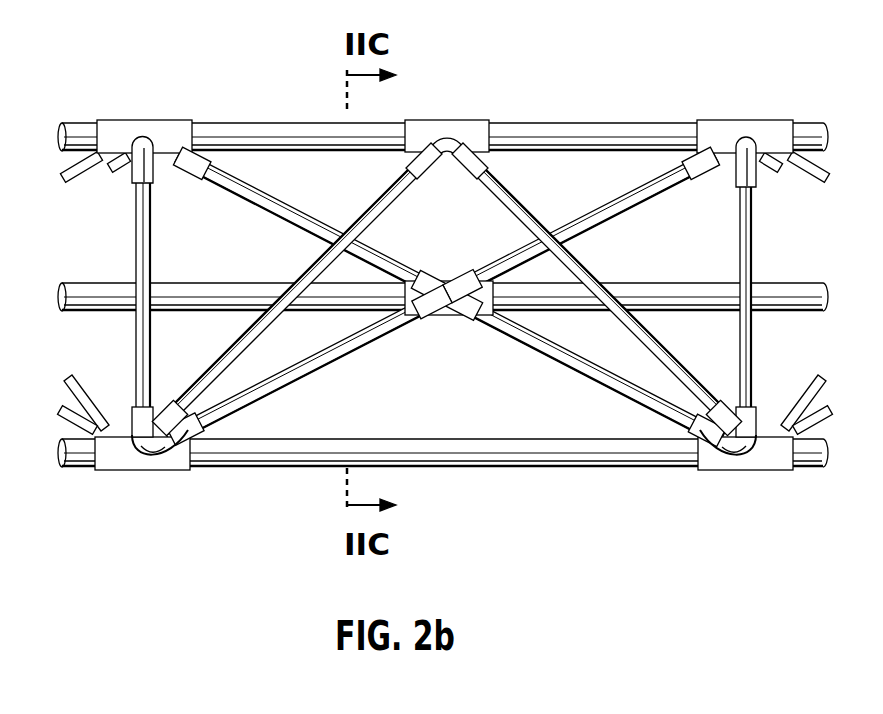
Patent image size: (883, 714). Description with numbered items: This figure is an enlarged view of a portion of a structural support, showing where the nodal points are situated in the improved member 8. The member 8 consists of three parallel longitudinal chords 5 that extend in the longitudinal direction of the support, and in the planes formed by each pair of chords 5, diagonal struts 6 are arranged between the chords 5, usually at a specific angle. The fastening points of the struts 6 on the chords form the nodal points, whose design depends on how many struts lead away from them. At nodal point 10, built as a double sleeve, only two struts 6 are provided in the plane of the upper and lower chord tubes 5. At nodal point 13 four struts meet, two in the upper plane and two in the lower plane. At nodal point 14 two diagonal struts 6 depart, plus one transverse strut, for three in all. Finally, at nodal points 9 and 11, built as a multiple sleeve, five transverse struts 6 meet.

The longitudinal chord 5 is at (810, 134).
The diagonal strut 6 is at (363, 221).
The member 8 is at (608, 516).
The nodal point 9 is at (718, 446).
The nodal point 10 is at (476, 131).
The nodal point 11 is at (122, 470).
The nodal point 13 is at (452, 318).
The nodal point 14 is at (757, 128).